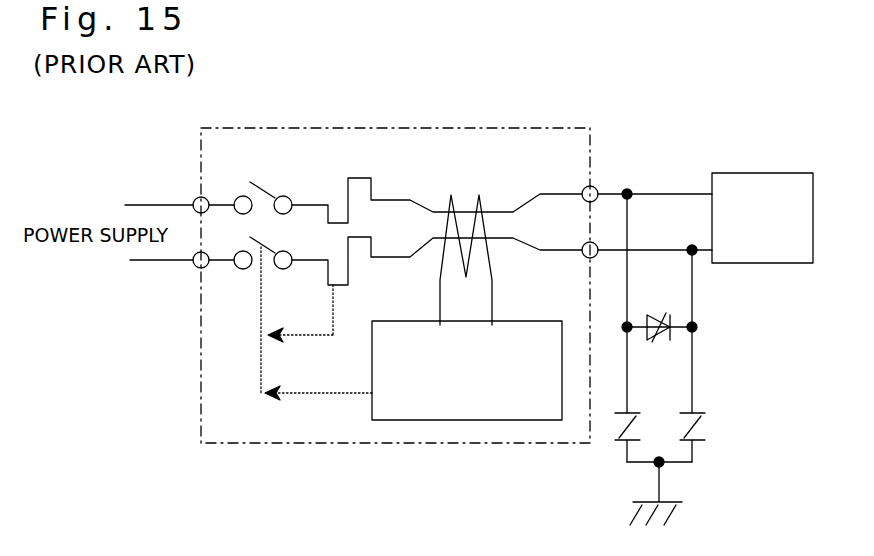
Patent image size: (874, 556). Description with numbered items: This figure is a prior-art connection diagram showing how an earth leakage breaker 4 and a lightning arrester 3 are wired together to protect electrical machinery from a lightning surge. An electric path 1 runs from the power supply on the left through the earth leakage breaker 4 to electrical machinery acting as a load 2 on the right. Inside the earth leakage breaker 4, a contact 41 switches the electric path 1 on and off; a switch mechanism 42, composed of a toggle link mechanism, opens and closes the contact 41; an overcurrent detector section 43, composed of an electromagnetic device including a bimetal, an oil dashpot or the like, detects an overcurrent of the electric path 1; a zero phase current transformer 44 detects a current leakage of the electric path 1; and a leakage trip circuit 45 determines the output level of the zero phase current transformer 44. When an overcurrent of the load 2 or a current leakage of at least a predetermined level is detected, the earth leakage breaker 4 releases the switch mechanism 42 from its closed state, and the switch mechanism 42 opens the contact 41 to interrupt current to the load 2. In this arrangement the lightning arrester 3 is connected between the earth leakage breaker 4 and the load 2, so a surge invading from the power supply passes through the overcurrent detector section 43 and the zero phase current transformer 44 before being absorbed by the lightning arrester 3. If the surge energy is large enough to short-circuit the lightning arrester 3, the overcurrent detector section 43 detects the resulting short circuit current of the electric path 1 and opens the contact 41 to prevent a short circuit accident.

The electric path 1 is at (667, 193).
The electrical machinery acting as a load 2 is at (747, 173).
The lightning arrester 3 is at (698, 428).
The earth leakage breaker 4 is at (563, 128).
The contact 41 is at (262, 188).
The switch mechanism 42 is at (262, 320).
The overcurrent detector section 43 is at (360, 177).
The zero phase current transformer 44 is at (455, 220).
The leakage trip circuit 45 is at (473, 422).